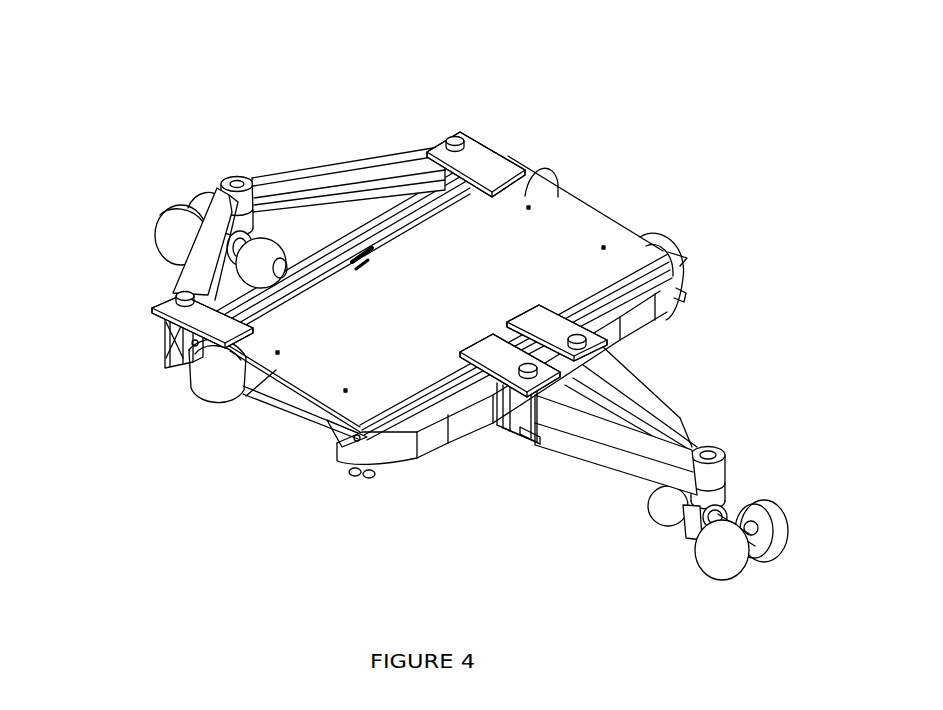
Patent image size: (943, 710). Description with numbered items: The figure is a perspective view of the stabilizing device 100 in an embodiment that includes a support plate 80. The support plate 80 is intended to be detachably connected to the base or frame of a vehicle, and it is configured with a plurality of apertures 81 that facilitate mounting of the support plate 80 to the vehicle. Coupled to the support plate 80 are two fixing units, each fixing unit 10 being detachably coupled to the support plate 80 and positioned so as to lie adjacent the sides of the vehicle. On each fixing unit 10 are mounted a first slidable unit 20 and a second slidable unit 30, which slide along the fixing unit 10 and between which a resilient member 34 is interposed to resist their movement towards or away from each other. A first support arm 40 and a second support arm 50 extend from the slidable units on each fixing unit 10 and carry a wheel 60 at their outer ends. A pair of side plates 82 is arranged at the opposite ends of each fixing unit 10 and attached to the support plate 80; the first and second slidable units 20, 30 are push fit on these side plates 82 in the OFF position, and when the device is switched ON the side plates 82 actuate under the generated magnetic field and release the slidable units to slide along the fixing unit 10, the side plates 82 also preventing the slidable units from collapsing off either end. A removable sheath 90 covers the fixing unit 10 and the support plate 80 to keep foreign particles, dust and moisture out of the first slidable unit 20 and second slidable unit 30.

The stabilizing device 100 is at (662, 71).
The fixing unit 10 is at (306, 272).
The first slidable unit 20 is at (163, 331).
The second slidable unit 30 is at (483, 144).
The resilient member 34 is at (367, 247).
The first support arm 40 is at (181, 271).
The second support arm 50 is at (338, 158).
The wheel 60 is at (169, 207).
The support plate 80 is at (573, 225).
The apertures 81 is at (531, 205).
The side plates 82 is at (201, 354).
The removable sheath 90 is at (674, 301).